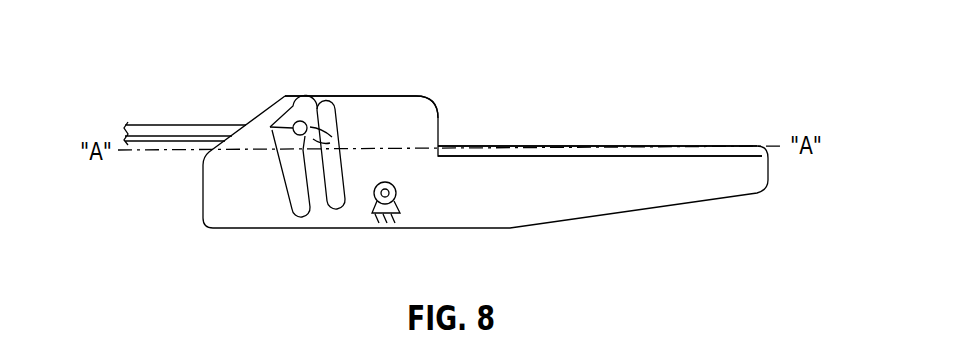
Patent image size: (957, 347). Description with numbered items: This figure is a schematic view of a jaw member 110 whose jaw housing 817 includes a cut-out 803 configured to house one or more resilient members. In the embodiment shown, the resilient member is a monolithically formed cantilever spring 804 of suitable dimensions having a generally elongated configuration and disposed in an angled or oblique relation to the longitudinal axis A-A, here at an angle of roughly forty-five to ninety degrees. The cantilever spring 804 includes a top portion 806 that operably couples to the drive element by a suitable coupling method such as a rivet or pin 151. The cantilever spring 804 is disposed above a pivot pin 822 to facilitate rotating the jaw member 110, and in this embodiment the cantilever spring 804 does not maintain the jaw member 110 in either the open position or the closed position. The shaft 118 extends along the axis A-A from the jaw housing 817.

The jaw member 110 is at (668, 115).
The elongated shaft 118 is at (741, 150).
The pin 151 is at (296, 122).
The cut-out 803 is at (307, 114).
The cantilever spring 804 is at (322, 125).
The top portion 806 is at (336, 130).
The jaw housing 817 is at (757, 195).
The pivot pin 822 is at (388, 182).